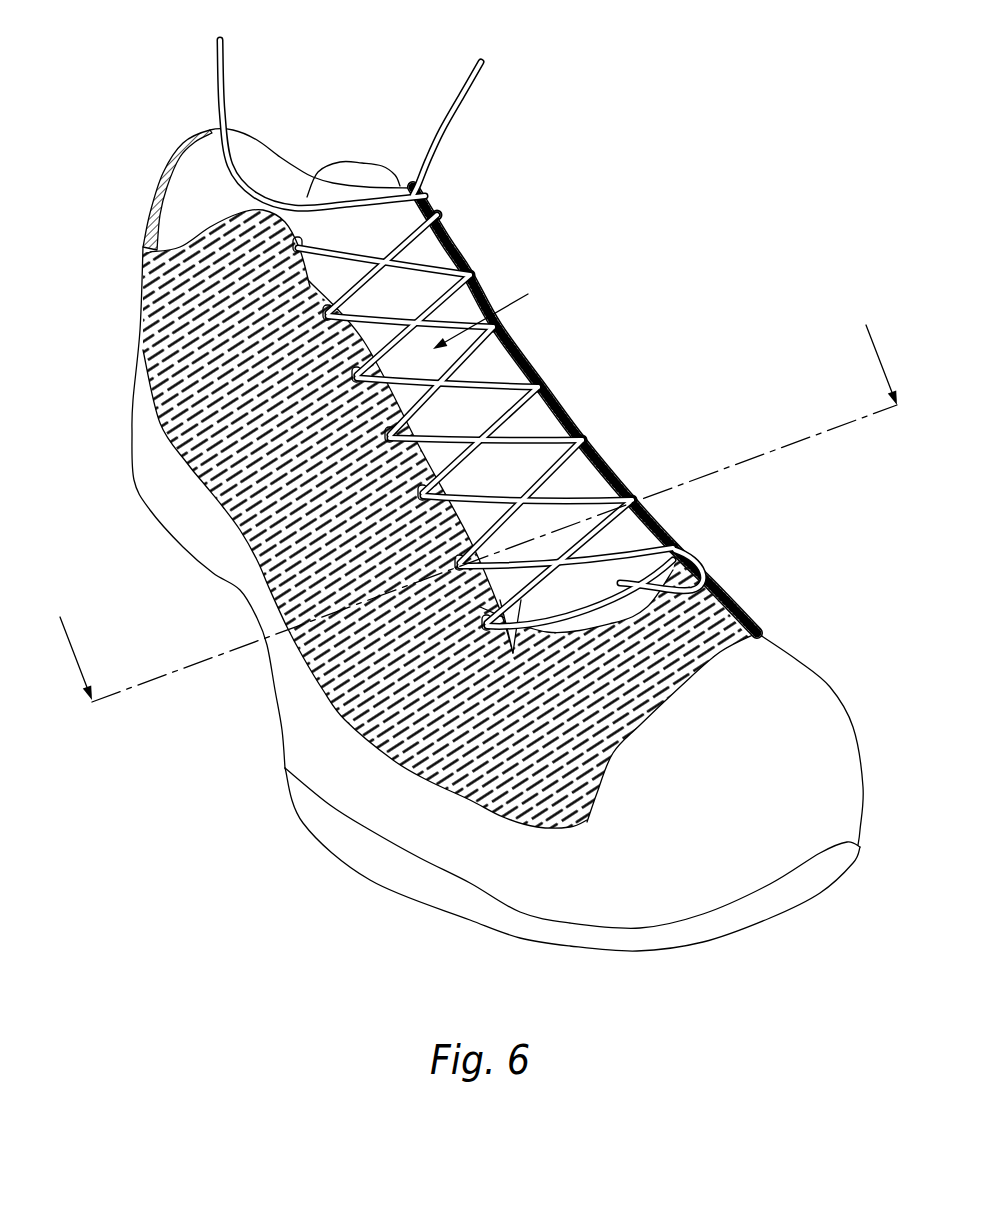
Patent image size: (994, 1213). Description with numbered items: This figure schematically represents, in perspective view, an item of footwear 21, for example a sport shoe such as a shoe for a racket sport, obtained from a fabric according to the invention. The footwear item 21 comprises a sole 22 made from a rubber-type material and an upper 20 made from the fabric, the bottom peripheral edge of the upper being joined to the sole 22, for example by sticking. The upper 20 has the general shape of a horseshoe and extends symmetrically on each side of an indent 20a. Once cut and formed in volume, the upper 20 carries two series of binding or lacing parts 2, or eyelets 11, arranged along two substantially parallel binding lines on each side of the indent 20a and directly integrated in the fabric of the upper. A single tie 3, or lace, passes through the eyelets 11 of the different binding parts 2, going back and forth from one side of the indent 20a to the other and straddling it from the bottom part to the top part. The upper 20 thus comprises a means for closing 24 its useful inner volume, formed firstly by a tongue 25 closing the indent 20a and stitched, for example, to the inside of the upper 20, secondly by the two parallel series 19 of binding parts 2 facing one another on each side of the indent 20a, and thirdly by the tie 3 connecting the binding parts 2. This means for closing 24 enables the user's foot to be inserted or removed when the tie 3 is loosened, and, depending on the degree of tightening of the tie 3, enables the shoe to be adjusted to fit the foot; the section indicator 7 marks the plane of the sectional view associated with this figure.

The binding or lacing parts 2 is at (470, 315).
The tie 3 is at (497, 393).
The section line VII-VII 7 is at (462, 485).
The eyelets 11 is at (317, 330).
The two parallel series of binding parts 19 is at (690, 566).
The upper 20 is at (675, 638).
The indent 20a is at (445, 472).
The item of footwear 21 is at (185, 122).
The sole 22 is at (806, 714).
The means for closing 24 is at (498, 313).
The tongue 25 is at (355, 187).